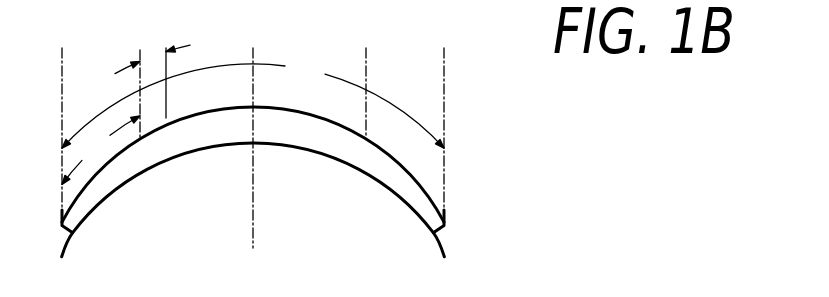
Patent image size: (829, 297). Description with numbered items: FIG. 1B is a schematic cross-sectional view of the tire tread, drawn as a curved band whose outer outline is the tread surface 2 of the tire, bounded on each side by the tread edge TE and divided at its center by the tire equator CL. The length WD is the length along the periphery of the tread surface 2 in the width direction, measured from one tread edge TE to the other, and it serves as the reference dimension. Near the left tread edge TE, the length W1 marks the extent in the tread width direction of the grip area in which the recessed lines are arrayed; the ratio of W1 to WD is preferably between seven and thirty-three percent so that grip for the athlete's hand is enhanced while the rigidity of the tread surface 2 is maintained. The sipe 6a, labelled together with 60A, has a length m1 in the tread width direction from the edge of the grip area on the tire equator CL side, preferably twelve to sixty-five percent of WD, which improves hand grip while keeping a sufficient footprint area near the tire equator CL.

The tread surface 2 is at (282, 182).
The sipe 6a is at (253, 165).
The cutting edge portion 60A is at (158, 130).
The tread edge TE is at (253, 115).
The tire equator CL is at (253, 134).
The length of the tread surface in the width direction WD is at (253, 104).
The length of the grip area in the tread width direction W1 is at (101, 150).
The length of the sipe in the tread width direction m1 is at (152, 50).